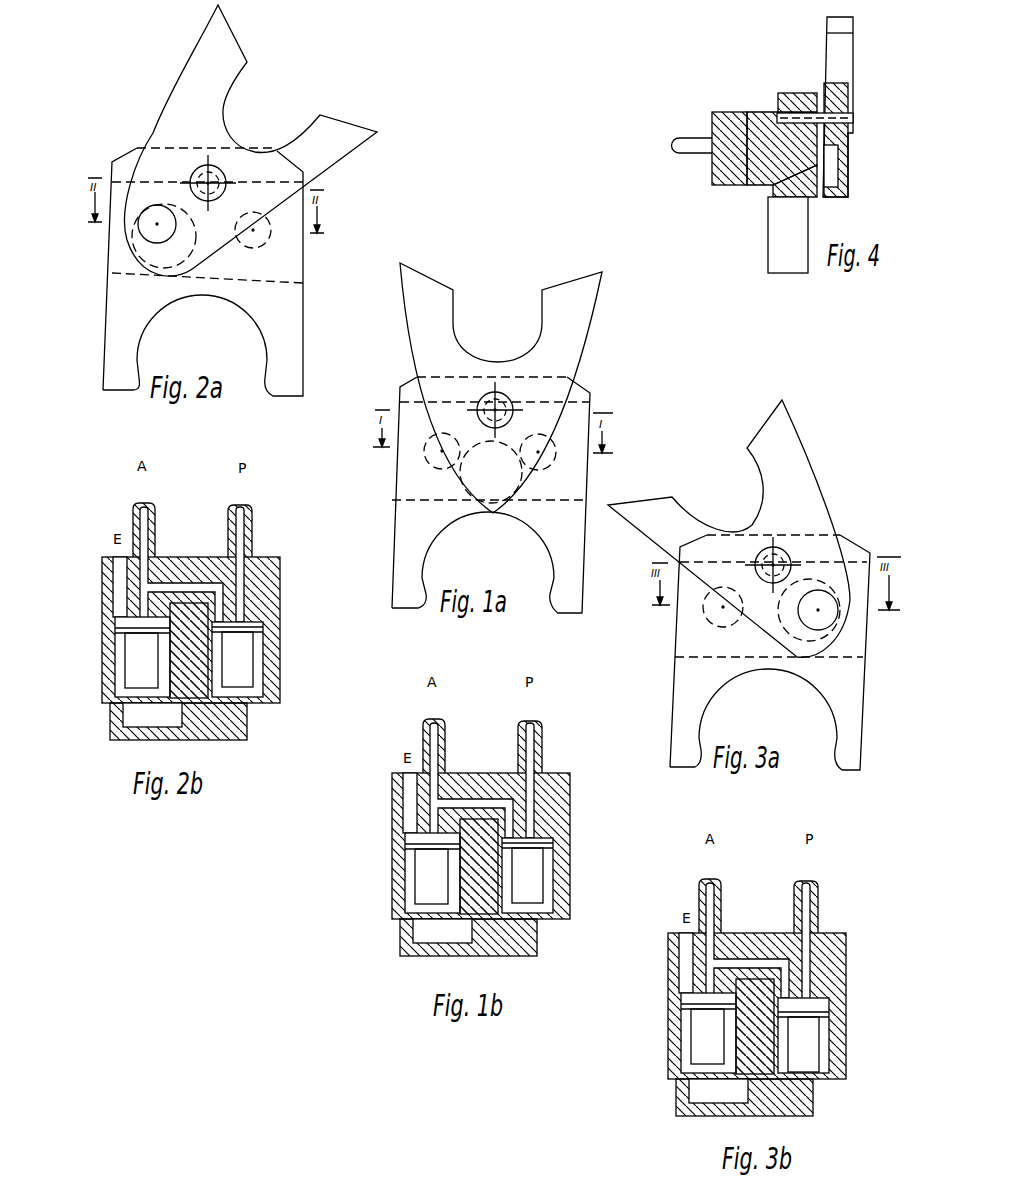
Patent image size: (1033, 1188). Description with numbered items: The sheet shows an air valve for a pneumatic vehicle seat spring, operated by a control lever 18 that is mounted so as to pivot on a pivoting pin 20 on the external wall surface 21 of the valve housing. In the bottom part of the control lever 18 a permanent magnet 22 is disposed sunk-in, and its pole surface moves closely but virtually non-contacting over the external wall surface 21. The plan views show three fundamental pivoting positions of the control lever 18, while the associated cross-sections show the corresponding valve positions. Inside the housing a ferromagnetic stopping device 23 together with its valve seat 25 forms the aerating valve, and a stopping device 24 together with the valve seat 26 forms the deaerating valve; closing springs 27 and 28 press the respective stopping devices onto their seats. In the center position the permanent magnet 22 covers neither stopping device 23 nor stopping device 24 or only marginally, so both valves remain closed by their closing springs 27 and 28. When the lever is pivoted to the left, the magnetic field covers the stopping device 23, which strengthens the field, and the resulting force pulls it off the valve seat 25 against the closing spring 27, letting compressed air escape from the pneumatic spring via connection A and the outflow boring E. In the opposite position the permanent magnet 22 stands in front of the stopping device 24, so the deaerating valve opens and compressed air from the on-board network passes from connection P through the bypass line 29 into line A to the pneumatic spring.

In FIG. 2A, the control lever 18 is at (347, 143).
In FIG. 1A, the control lever 18 is at (577, 301).
In FIG. 3A, the control lever 18 is at (778, 430).
In FIG. 4, the control lever 18 is at (845, 53).
In FIG. 2B, the control lever 18 is at (247, 718).
In FIG. 1B, the control lever 18 is at (497, 938).
In FIG. 3B, the control lever 18 is at (722, 1100).
In FIG. 1A, the pivoting pin 20 is at (507, 400).
In FIG. 4, the pivoting pin 20 is at (837, 120).
In FIG. 4, the external wall surface 21 is at (773, 187).
In FIG. 4, the permanent magnet 22 is at (828, 167).
In FIG. 2B, the permanent magnet 22 is at (143, 715).
In FIG. 1B, the permanent magnet 22 is at (408, 933).
In FIG. 3B, the permanent magnet 22 is at (787, 1093).
In FIG. 2B, the stopping device 23 is at (142, 645).
In FIG. 1B, the stopping device 23 is at (388, 873).
In FIG. 1B, the stopping device 24 is at (567, 873).
In FIG. 3B, the stopping device 24 is at (839, 1038).
In FIG. 2B, the valve seat 25 is at (143, 620).
In FIG. 1B, the valve seat 25 is at (393, 832).
In FIG. 1B, the valve seat 26 is at (562, 833).
In FIG. 3B, the valve seat 26 is at (834, 996).
In FIG. 2B, the closing spring 27 is at (120, 657).
In FIG. 1B, the closing spring 27 is at (394, 873).
In FIG. 1B, the closing spring 28 is at (562, 875).
In FIG. 3B, the closing spring 28 is at (834, 1035).
In FIG. 3B, the bypass line 29 is at (747, 938).